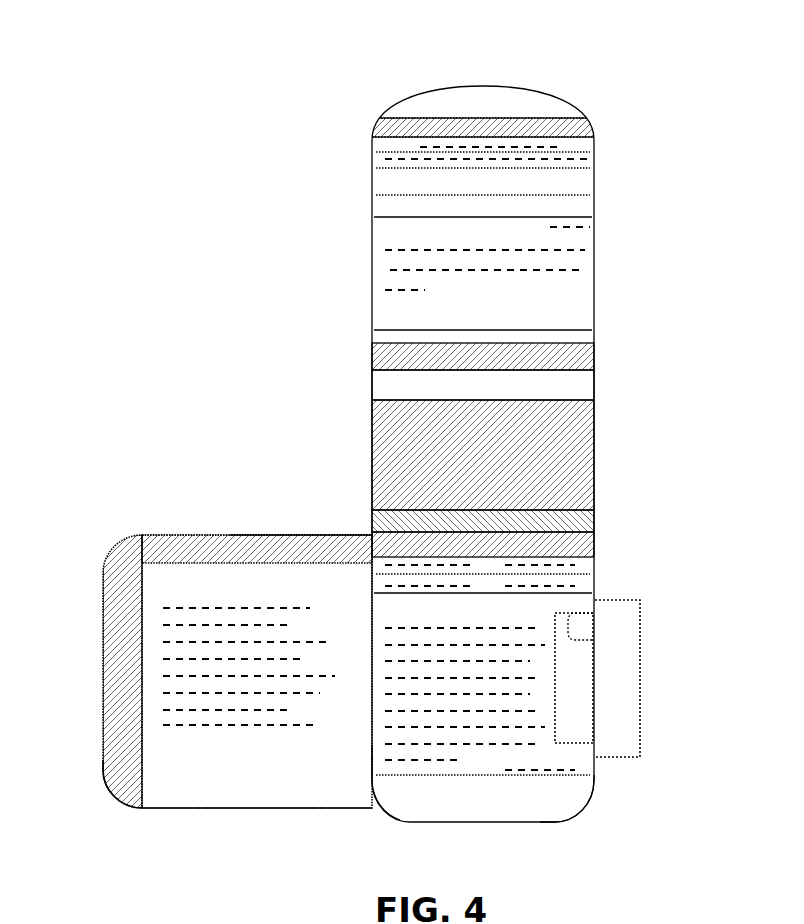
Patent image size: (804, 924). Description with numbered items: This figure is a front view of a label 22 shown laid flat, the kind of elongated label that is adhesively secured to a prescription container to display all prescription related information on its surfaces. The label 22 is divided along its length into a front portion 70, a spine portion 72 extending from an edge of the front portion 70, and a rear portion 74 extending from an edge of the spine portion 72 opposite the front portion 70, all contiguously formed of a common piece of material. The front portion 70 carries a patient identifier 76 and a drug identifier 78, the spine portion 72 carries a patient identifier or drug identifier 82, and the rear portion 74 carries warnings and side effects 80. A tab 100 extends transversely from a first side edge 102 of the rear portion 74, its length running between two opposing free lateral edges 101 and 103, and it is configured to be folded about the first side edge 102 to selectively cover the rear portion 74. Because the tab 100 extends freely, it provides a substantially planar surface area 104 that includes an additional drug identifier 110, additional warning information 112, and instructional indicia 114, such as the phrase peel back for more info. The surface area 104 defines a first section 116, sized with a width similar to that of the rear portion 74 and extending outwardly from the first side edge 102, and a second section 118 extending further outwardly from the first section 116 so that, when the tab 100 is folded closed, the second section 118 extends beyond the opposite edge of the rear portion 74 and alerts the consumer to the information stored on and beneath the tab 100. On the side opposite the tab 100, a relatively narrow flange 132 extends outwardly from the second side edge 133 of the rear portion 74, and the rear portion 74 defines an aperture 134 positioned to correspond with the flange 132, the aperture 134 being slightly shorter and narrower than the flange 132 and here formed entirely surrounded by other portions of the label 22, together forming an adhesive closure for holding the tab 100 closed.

The label 22 is at (511, 455).
The front portion 70 is at (385, 228).
The spine portion 72 is at (592, 438).
The rear portion 74 is at (583, 540).
The patient identifier 76 is at (582, 388).
The drug identifier 78 is at (582, 355).
The warnings and side effects 80 is at (480, 612).
The patient identifier or drug identifier 82 is at (592, 473).
The tab 100 is at (201, 673).
The free lateral edge 101 is at (258, 535).
The first side edge 102 is at (368, 750).
The free lateral edge 103 is at (300, 808).
The substantially planar surface area 104 is at (200, 800).
The additional drug identifier 110 is at (205, 545).
The additional warning information 112 is at (150, 577).
The instructional indicia 114 is at (112, 780).
The first section 116 is at (275, 798).
The second section 118 is at (135, 808).
The flange 132 is at (620, 667).
The second side edge 133 is at (595, 785).
The aperture 134 is at (575, 640).